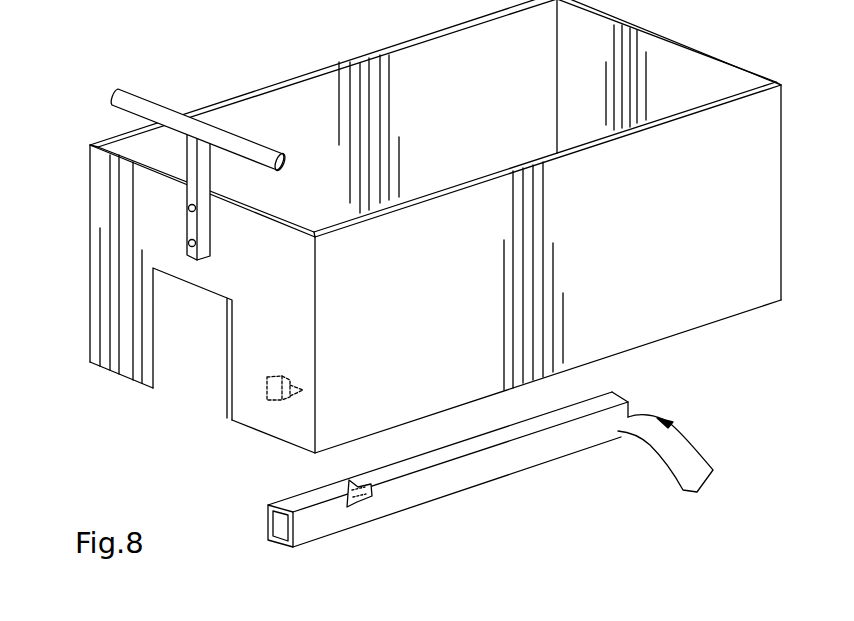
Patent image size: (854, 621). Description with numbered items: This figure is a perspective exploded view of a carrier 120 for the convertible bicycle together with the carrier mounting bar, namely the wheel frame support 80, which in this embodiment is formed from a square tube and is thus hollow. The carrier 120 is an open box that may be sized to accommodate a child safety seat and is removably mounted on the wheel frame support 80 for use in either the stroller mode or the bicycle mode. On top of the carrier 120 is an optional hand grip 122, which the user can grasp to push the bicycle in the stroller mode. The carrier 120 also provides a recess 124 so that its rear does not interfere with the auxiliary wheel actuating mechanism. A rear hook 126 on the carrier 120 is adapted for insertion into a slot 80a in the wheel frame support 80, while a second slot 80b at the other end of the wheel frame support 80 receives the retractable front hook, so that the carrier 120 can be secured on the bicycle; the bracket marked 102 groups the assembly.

The carrier 120 is at (267, 82).
The hand grip 122 is at (139, 98).
The recess 124 is at (192, 355).
The rear hook 126 is at (267, 390).
The wheel frame support 80 is at (515, 493).
The slot 80a is at (358, 500).
The slot 80b is at (640, 412).
The bin assembly 102 is at (322, 605).